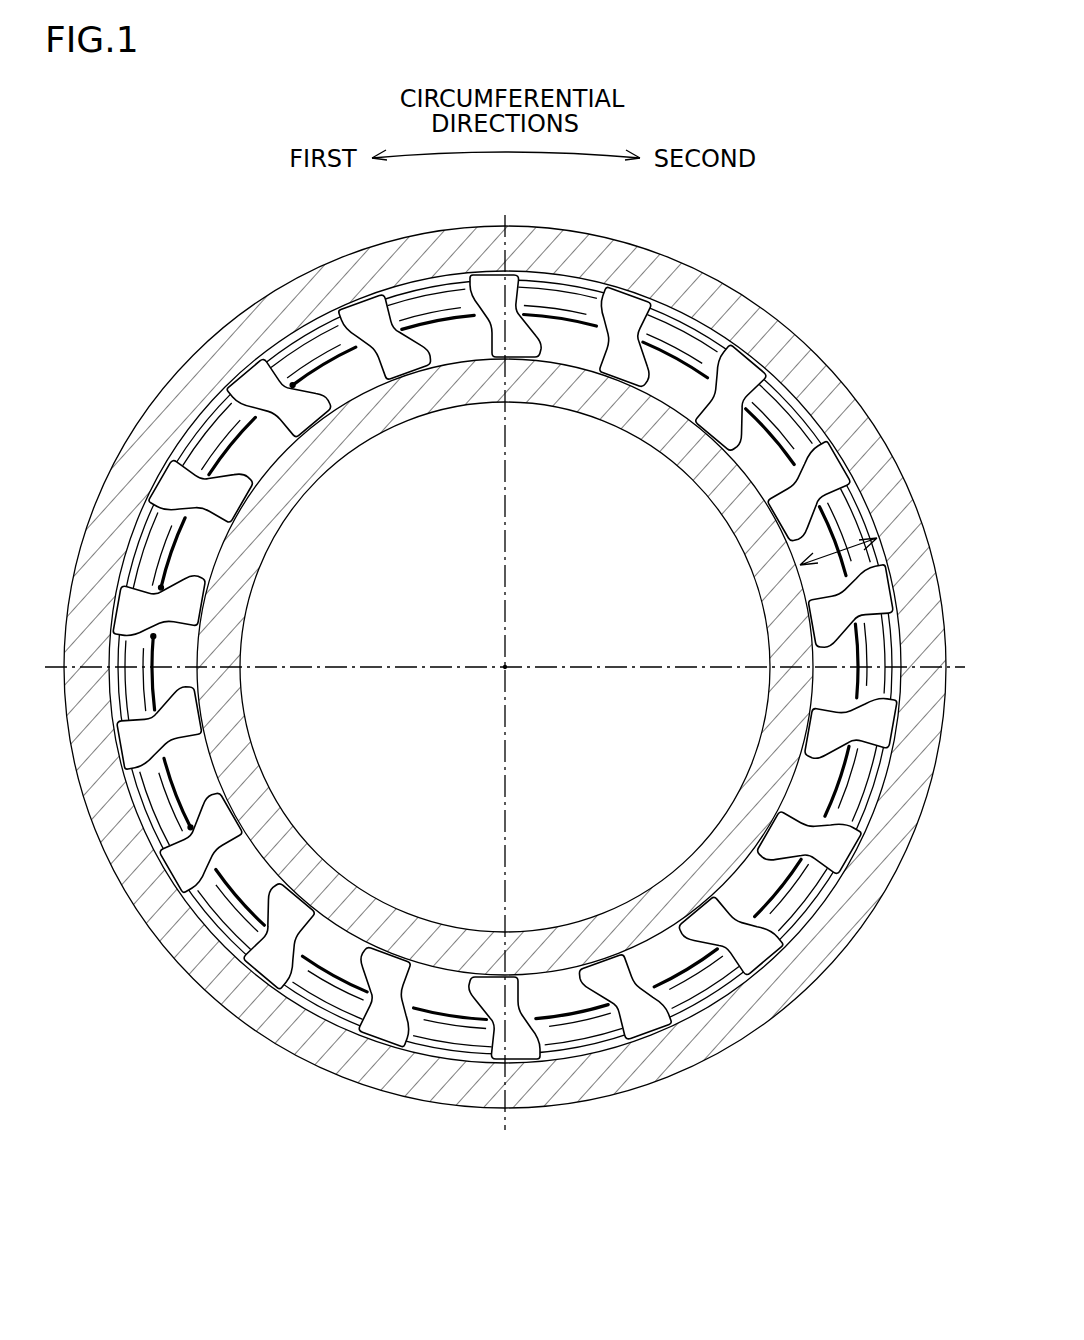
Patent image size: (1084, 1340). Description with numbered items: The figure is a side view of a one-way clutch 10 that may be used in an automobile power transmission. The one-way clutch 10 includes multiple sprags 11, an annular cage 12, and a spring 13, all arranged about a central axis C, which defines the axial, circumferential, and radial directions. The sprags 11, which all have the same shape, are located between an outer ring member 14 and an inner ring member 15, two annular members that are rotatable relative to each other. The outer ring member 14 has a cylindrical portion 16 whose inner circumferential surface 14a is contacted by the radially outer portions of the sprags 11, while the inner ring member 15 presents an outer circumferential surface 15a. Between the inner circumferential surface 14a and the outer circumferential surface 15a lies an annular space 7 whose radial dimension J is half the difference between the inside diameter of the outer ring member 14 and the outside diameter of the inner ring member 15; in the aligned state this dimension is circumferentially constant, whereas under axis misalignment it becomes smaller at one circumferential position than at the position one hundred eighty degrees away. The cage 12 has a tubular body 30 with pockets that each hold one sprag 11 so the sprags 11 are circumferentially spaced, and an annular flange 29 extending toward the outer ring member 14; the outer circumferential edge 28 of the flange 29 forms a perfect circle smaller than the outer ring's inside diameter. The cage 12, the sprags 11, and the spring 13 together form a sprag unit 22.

The annular space 7 is at (689, 331).
The one-way clutch 10 is at (792, 328).
The sprag 11 is at (495, 287).
The cage 12 is at (418, 308).
The spring 13 is at (327, 368).
The outer ring member 14 is at (788, 1005).
The inner circumferential surface 14a is at (218, 413).
The inner ring member 15 is at (428, 960).
The outer circumferential surface 15a is at (267, 465).
The cylindrical portion 16 is at (890, 848).
The sprag unit 22 is at (571, 341).
The outer circumferential edge 28 is at (142, 515).
The flange 29 is at (152, 540).
The body 30 is at (303, 360).
The central axis C is at (507, 665).
The radial dimension J is at (850, 543).